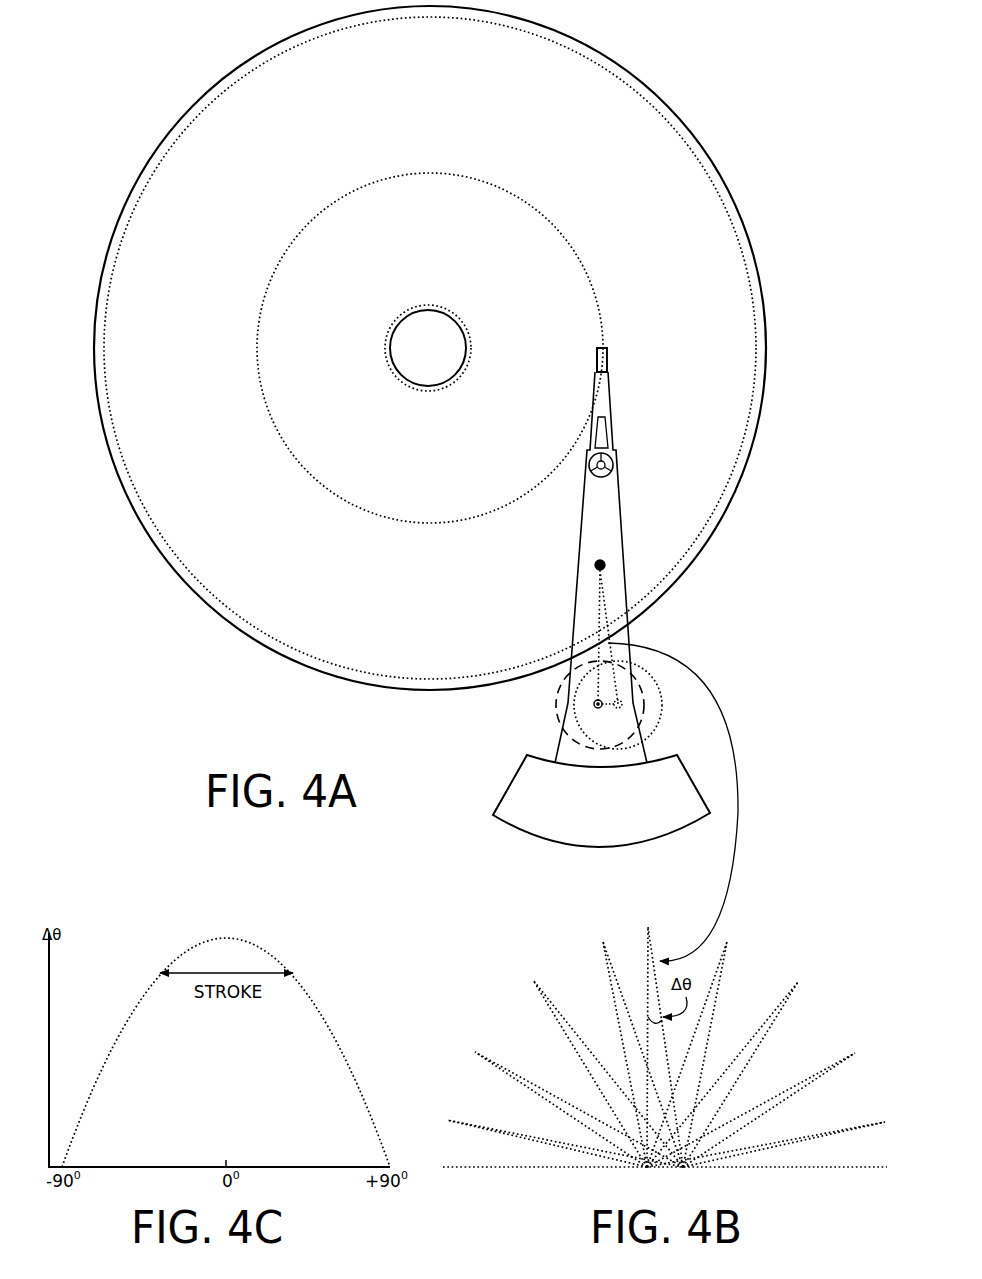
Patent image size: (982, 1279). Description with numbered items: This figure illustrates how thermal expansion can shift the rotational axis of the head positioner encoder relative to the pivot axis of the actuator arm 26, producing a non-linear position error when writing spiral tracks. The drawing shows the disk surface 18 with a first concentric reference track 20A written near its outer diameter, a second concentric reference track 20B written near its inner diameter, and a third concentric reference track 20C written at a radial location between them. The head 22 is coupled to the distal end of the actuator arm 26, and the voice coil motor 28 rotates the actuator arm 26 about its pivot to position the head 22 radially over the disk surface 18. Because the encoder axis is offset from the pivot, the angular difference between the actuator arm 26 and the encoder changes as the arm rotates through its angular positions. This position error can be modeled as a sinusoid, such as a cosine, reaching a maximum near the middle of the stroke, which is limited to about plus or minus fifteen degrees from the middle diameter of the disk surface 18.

The disk surface 18 is at (647, 80).
The first concentric reference track 20A is at (743, 433).
The second concentric reference track 20B is at (472, 348).
The third concentric reference track 20C is at (588, 280).
The head 22 is at (612, 355).
The actuator arm 26 is at (622, 523).
The voice coil motor 28 is at (514, 779).